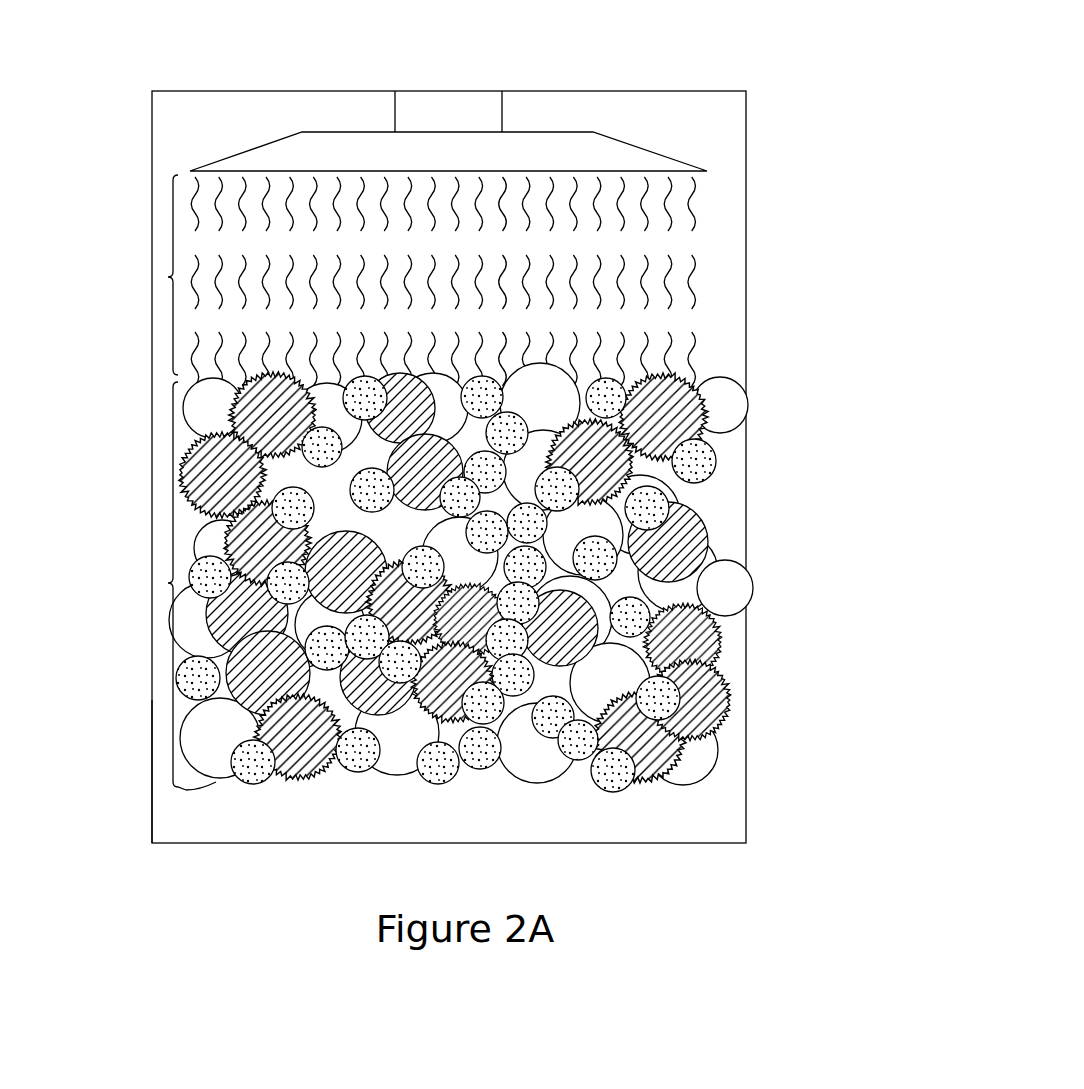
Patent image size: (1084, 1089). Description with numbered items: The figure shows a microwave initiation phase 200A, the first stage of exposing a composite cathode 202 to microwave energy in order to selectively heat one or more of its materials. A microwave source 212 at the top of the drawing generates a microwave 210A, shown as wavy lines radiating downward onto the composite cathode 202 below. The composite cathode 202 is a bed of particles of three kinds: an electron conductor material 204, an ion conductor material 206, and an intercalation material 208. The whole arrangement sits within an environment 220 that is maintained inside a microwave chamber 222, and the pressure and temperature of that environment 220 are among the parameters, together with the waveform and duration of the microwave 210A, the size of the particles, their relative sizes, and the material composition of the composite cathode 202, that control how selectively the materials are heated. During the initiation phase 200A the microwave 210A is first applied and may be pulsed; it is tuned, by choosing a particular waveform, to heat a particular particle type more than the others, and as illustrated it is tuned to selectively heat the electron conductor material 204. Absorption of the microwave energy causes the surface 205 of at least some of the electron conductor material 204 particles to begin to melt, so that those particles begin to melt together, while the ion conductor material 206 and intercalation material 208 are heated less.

The microwave initiation phase 200A is at (662, 60).
The microwave source 212 is at (645, 150).
The microwave 210A is at (406, 280).
The composite cathode 202 is at (419, 581).
The intercalation material 208 is at (222, 419).
The electron conductor material 204 is at (290, 424).
The surface 205 is at (188, 495).
The ion conductor material 206 is at (720, 465).
The microwave chamber 222 is at (152, 790).
The environment 220 is at (215, 820).